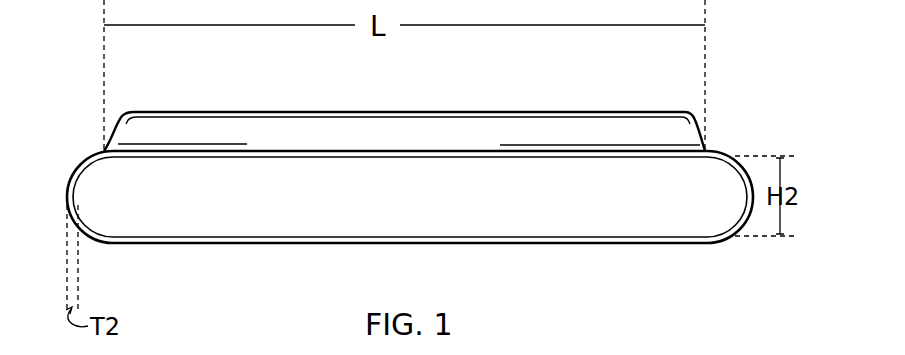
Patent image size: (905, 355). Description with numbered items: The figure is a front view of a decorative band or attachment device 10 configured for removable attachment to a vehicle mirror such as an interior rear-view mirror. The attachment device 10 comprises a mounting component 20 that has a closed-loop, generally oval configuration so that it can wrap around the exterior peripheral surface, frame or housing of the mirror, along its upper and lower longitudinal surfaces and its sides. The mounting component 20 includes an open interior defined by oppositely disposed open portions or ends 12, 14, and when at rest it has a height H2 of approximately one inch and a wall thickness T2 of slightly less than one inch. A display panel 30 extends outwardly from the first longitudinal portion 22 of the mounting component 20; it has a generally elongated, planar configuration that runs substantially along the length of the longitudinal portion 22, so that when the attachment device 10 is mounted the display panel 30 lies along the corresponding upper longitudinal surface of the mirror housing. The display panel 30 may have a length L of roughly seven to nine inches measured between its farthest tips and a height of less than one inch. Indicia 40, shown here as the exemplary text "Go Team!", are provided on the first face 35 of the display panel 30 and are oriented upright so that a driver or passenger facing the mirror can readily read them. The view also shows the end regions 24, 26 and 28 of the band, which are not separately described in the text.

The attachment device 10 is at (680, 72).
The open portion 12 is at (430, 209).
The open portion 14 is at (470, 209).
The mounting component 20 is at (722, 148).
The first longitudinal portion 22 is at (307, 158).
The lower wall 24 is at (615, 237).
The first end 26 is at (74, 180).
The second end 28 is at (745, 192).
The display panel 30 is at (185, 112).
The first face 35 is at (570, 127).
The indicia 40 is at (357, 126).